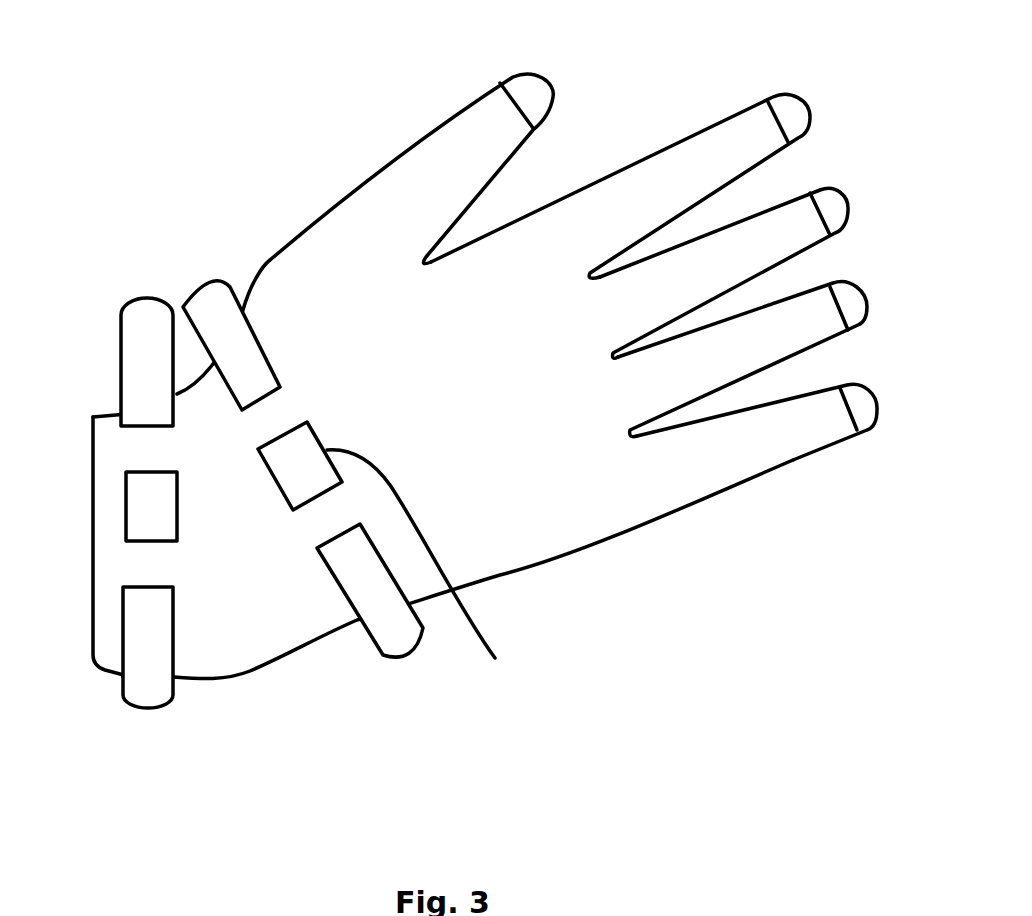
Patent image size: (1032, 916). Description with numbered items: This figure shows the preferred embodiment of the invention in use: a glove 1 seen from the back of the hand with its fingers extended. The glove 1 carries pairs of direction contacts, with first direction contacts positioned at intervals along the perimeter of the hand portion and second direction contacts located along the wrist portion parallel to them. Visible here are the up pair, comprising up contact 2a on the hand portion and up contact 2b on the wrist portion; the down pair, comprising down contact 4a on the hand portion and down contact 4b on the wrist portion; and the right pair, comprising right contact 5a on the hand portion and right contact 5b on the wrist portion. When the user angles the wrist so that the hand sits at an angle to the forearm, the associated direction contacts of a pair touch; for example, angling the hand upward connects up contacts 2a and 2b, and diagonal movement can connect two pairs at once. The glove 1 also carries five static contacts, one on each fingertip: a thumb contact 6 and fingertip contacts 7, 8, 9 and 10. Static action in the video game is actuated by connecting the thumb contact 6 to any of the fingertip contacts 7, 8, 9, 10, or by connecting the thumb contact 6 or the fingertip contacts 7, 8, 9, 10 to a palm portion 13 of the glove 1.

The glove 1 is at (510, 586).
The palm portion 13 is at (358, 303).
The thumb contact 6 is at (533, 83).
The fingertip contact 7 is at (797, 113).
The fingertip contact 8 is at (840, 207).
The fingertip contact 9 is at (858, 307).
The fingertip contact 10 is at (872, 410).
The up contact 2a is at (195, 290).
The up contact 2b is at (121, 373).
The down contact 4a is at (400, 655).
The down contact 4b is at (145, 709).
The right contact 5a is at (398, 563).
The right contact 5b is at (118, 502).